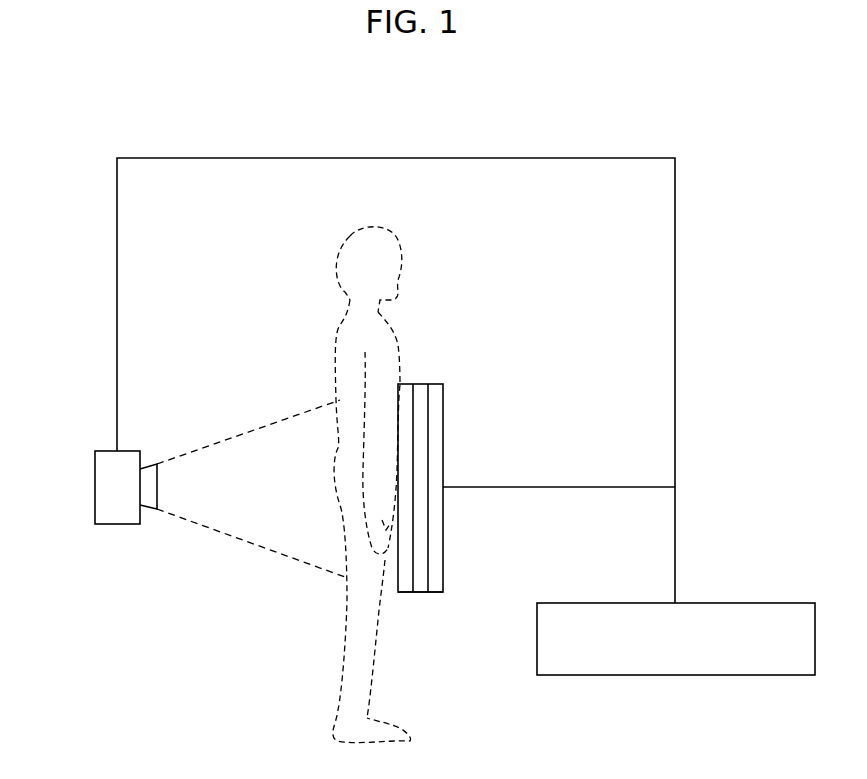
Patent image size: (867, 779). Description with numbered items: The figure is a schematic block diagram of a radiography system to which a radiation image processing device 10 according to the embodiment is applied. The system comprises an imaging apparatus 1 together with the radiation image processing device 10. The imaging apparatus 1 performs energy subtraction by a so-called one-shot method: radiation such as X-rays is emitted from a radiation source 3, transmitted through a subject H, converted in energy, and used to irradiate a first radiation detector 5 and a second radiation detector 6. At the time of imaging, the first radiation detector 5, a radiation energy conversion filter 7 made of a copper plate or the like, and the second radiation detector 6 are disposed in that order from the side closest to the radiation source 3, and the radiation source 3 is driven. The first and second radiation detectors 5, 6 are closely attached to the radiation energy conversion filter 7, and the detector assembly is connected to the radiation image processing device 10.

The imaging apparatus 1 is at (160, 127).
The radiation source 3 is at (95, 486).
The subject H is at (350, 236).
The first radiation detector 5 is at (405, 384).
The second radiation detector 6 is at (430, 384).
The radiation energy conversion filter 7 is at (418, 592).
The radiation image processing device 10 is at (779, 603).